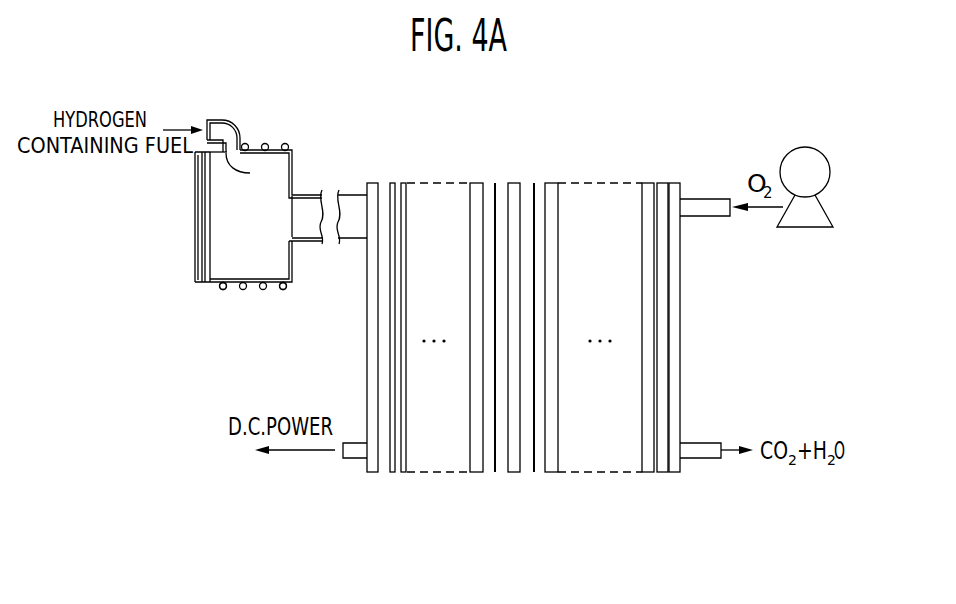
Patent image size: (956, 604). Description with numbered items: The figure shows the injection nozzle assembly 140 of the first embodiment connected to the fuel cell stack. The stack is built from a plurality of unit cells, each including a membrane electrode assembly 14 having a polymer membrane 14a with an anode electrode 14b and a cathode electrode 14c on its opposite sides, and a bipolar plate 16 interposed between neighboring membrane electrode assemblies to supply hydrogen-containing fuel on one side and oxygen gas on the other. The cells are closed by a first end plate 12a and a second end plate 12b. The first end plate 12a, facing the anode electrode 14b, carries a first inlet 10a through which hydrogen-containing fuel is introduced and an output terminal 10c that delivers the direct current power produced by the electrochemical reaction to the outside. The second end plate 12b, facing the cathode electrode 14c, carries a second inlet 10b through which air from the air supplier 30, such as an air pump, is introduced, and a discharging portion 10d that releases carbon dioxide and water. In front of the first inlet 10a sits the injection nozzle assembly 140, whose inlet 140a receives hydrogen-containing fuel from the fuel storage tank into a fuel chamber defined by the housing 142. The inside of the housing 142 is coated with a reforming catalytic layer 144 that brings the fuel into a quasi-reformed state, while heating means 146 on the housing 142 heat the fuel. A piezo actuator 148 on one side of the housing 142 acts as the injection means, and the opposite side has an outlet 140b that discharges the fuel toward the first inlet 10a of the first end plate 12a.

The injection nozzle assembly 140 is at (172, 290).
The inlet 140a is at (218, 121).
The outlet 140b is at (288, 217).
The reforming catalytic layer 144 is at (235, 172).
The piezo actuator 148 is at (195, 240).
The heating means 146 is at (220, 289).
The housing 142 is at (274, 289).
The first inlet 10a is at (353, 184).
The second inlet 10b is at (702, 198).
The output terminal 10c is at (350, 459).
The discharging portion 10d is at (698, 459).
The first end plate 12a is at (372, 474).
The second end plate 12b is at (672, 474).
The membrane electrode assembly 14 is at (537, 177).
The polymer membrane 14a is at (515, 474).
The anode electrode 14b is at (495, 474).
The cathode electrode 14c is at (535, 474).
The bipolar plate 16 is at (477, 183).
The air supplier 30 is at (805, 229).